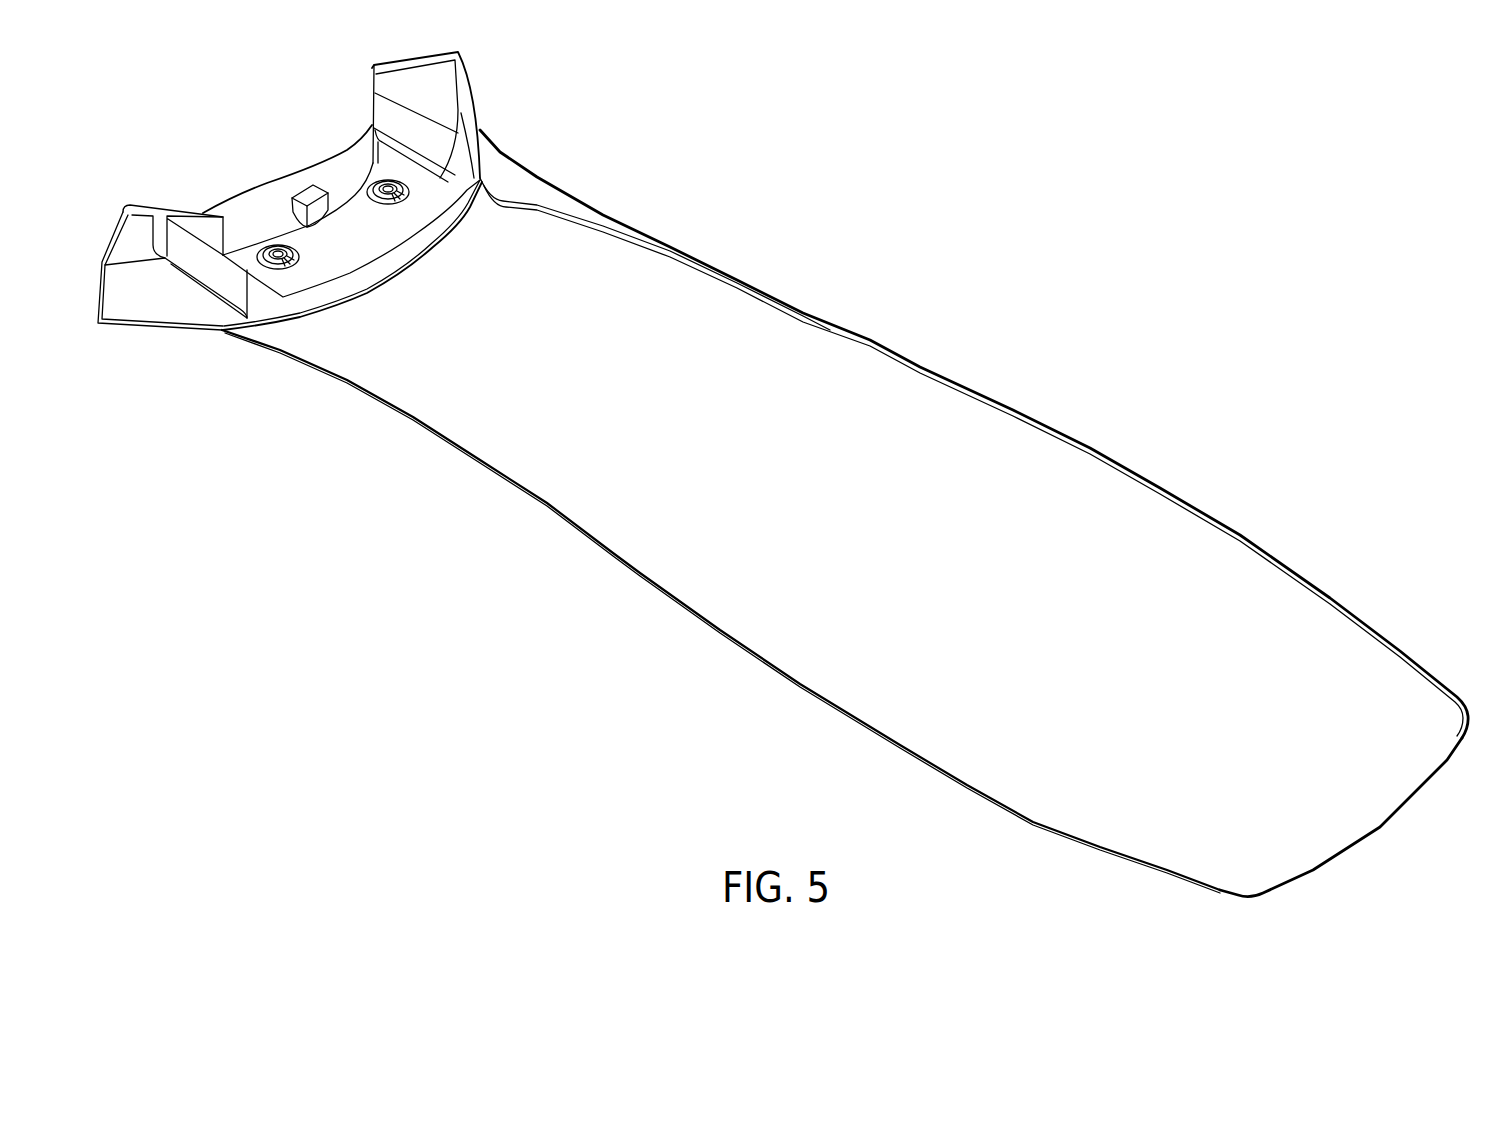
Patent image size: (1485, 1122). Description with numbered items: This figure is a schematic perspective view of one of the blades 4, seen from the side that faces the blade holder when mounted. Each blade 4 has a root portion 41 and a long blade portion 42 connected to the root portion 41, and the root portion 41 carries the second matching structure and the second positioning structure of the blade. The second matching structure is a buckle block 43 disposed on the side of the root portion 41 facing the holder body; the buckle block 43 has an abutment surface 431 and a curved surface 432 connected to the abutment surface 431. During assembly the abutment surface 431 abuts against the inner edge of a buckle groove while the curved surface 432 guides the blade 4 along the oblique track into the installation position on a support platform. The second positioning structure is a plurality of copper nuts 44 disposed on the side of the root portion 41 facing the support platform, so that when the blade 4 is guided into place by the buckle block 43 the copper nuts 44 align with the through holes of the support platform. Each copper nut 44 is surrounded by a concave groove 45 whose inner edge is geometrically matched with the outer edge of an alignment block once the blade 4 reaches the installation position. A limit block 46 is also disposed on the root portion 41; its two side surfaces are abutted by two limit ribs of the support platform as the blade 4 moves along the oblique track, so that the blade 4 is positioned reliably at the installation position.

The blade 4 is at (947, 302).
The root portion 41 is at (464, 93).
The blade portion 42 is at (686, 583).
The buckle block 43 is at (323, 200).
The abutment surface 431 is at (298, 186).
The curved surface 432 is at (298, 210).
The copper nut 44 is at (284, 262).
The concave groove 45 is at (274, 266).
The limit block 46 is at (237, 233).